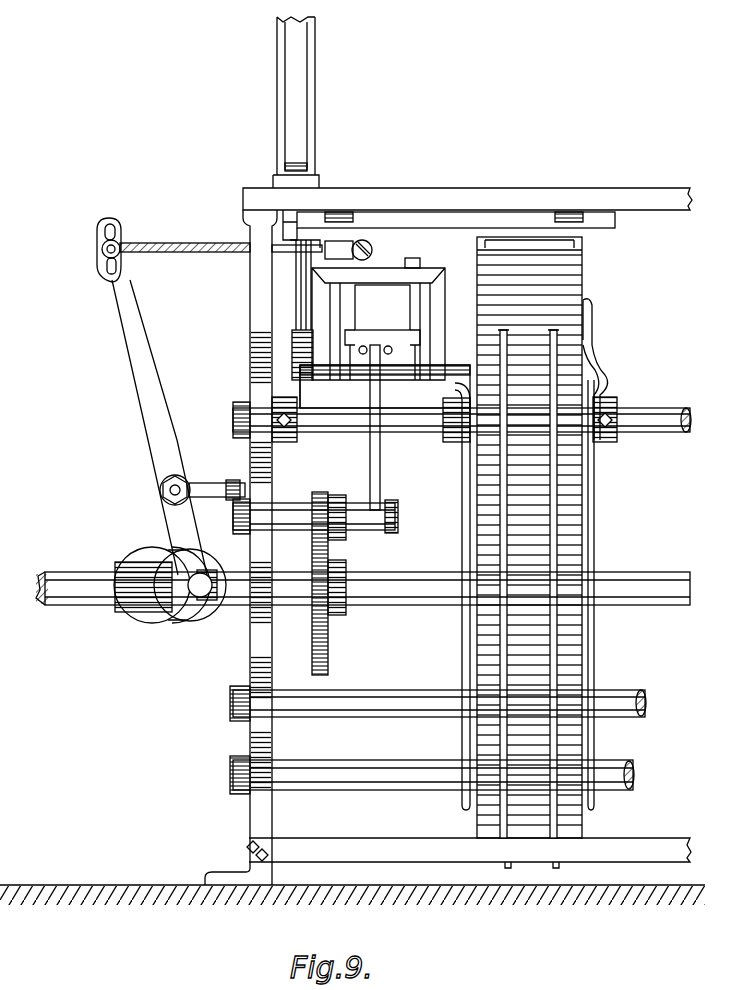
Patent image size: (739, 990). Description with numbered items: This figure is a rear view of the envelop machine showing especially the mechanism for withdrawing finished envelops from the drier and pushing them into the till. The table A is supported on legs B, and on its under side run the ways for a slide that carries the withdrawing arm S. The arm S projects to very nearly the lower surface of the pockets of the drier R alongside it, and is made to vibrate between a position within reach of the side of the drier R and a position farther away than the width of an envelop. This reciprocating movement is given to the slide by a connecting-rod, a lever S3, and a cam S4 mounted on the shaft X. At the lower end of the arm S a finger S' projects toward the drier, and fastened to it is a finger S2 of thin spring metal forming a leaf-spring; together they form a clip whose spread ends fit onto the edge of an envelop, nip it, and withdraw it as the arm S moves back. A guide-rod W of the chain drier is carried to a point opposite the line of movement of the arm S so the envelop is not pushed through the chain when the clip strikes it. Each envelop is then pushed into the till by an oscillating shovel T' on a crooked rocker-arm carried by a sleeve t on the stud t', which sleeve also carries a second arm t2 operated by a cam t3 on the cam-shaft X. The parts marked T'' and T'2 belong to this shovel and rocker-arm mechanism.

The table A is at (467, 188).
The legs B is at (250, 355).
The arm S is at (346, 306).
The finger S' is at (449, 225).
The finger S2 is at (206, 236).
The lever S3 is at (148, 365).
The cam S4 is at (152, 623).
The oscillating shovel T' is at (385, 587).
The head T'' is at (378, 319).
The rod T'2 is at (394, 427).
The sleeve t is at (314, 532).
The stud t' is at (405, 516).
The second arm t2 is at (338, 540).
The cam t3 is at (328, 645).
The drier R is at (541, 537).
The guide-rod W is at (596, 330).
The shaft X is at (410, 630).